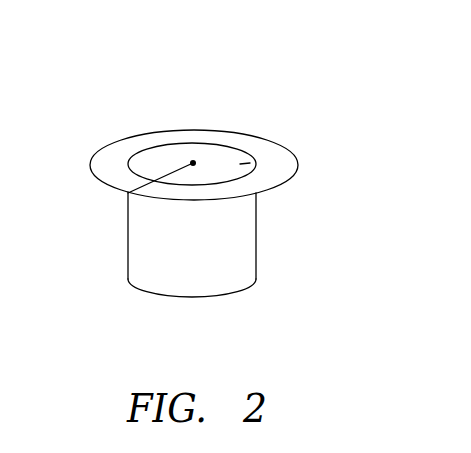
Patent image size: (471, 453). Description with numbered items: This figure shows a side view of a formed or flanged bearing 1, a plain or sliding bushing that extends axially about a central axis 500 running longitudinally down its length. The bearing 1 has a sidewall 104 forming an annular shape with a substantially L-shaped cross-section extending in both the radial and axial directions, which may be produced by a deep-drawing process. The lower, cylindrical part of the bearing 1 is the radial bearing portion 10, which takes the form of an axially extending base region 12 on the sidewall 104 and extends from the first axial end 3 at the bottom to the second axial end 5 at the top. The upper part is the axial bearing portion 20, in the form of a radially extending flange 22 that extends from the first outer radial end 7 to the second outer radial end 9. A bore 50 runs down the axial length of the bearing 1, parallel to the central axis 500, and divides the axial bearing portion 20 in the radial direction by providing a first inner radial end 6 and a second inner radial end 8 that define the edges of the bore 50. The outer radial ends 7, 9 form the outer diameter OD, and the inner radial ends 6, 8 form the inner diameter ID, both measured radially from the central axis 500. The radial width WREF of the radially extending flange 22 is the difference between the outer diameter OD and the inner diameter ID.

The bearing 1 is at (340, 100).
The first axial end 3 is at (257, 278).
The second axial end 5 is at (113, 143).
The first inner radial end 6 is at (129, 162).
The first outer radial end 7 is at (92, 164).
The second inner radial end 8 is at (263, 170).
The second outer radial end 9 is at (298, 165).
The radial bearing portion 10 is at (257, 255).
The axially extending base region 12 is at (128, 228).
The axial bearing portion 20 is at (292, 158).
The radially extending flange 22 is at (107, 155).
The bore 50 is at (256, 162).
The sidewall 104 is at (255, 150).
The central axis 500 is at (193, 185).
The inner diameter ID is at (198, 173).
The outer diameter OD is at (99, 179).
The radial width of the radially extending flange WREF is at (165, 145).